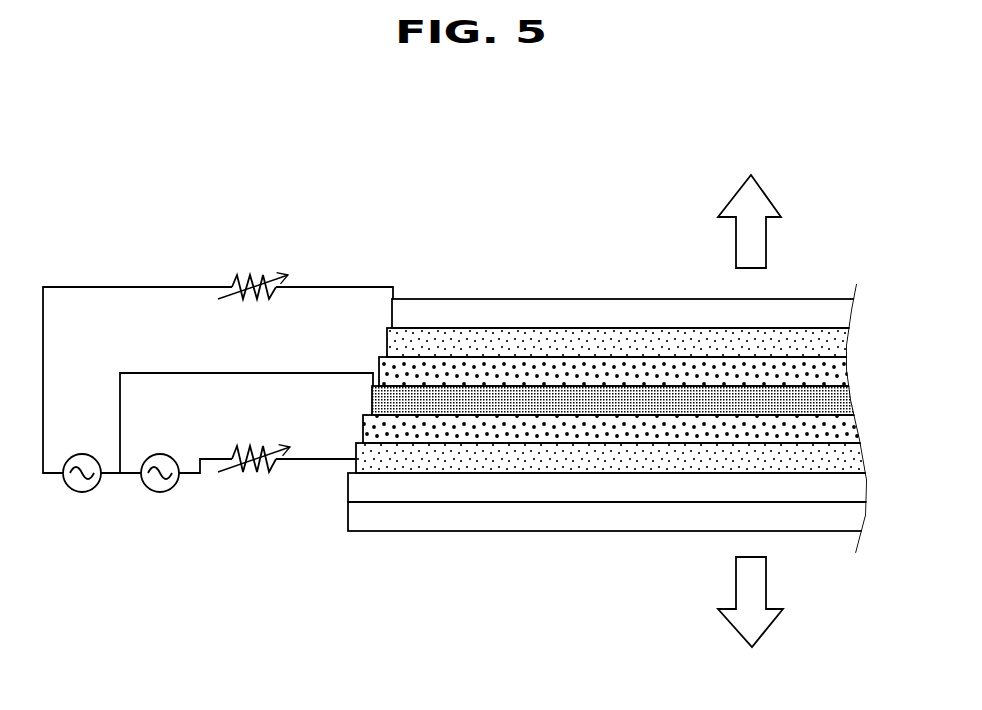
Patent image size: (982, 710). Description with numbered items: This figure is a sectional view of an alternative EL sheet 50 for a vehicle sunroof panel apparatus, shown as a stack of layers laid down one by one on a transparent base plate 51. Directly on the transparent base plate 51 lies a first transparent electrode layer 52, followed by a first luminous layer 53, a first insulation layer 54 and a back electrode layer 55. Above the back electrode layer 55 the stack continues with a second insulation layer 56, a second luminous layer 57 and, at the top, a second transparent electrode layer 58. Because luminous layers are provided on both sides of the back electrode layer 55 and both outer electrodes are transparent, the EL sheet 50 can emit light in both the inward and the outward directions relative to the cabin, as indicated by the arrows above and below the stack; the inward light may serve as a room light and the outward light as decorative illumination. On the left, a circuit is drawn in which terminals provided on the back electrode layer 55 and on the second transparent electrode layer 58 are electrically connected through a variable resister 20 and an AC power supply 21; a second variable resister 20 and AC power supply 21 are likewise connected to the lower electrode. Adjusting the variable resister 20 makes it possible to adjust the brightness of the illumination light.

The variable resister 20 is at (247, 260).
The AC power supply 21 is at (82, 454).
The EL sheet 50 is at (601, 356).
The transparent base plate 51 is at (603, 515).
The first transparent electrode layer 52 is at (553, 488).
The first luminous layer 53 is at (502, 460).
The first insulation layer 54 is at (453, 430).
The back electrode layer 55 is at (598, 400).
The second insulation layer 56 is at (548, 368).
The second luminous layer 57 is at (498, 347).
The second transparent electrode layer 58 is at (447, 318).